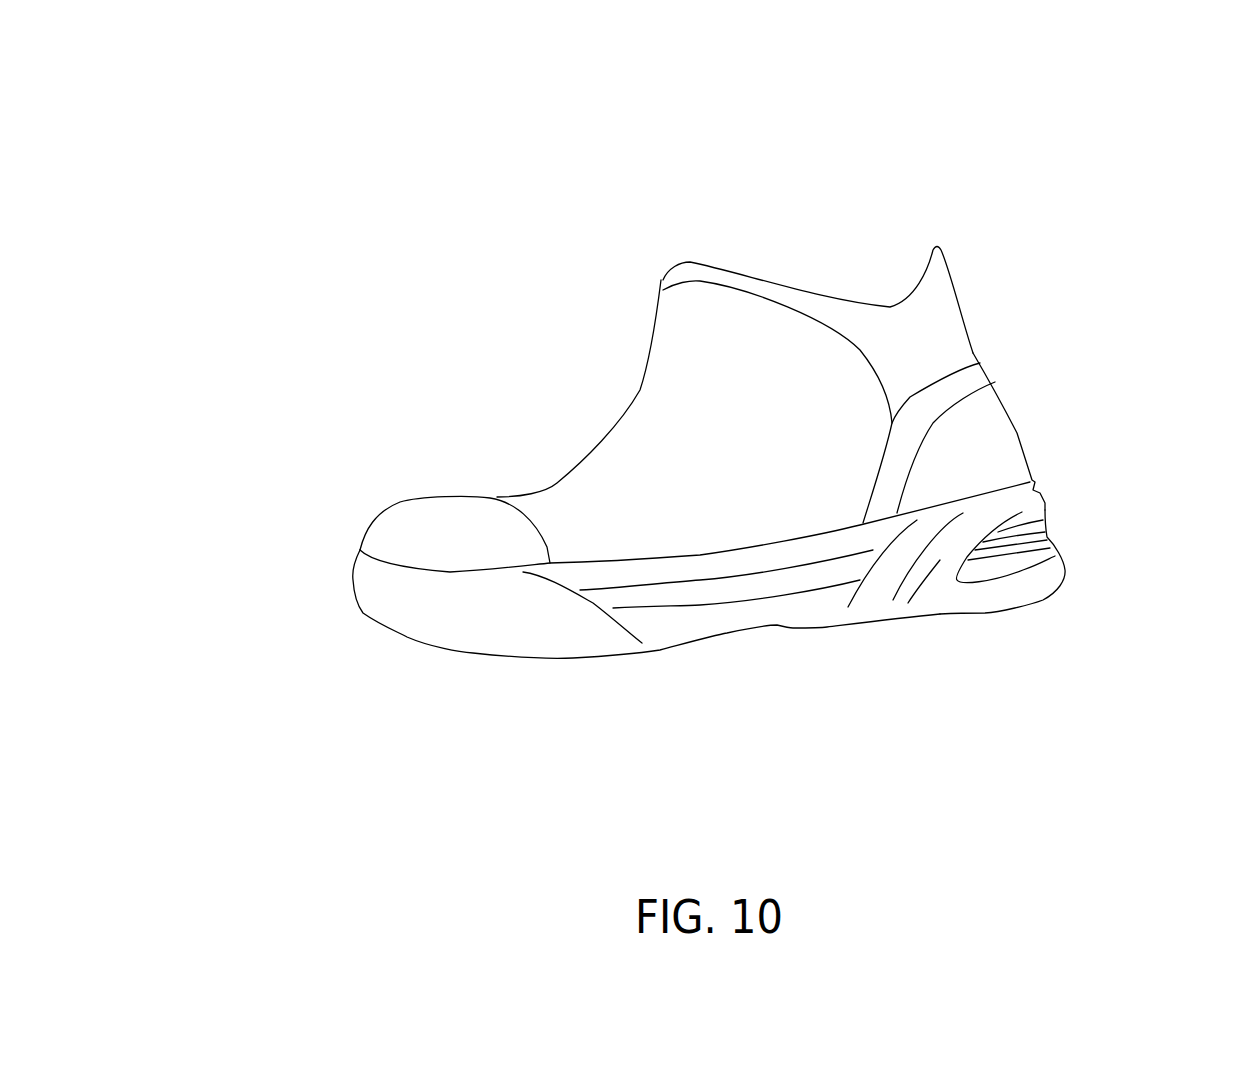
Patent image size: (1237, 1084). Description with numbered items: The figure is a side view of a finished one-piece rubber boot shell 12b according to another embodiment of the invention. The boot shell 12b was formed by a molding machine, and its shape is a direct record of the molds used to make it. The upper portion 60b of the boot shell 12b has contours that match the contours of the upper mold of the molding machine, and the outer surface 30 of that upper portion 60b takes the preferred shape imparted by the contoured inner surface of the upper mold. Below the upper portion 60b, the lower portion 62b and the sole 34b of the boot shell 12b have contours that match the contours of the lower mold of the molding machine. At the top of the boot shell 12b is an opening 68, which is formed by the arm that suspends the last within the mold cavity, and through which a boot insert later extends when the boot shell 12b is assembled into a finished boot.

The opening 68 is at (858, 268).
The outer surface 30 is at (938, 363).
The boot shell 12b is at (993, 457).
The upper portion 60b is at (642, 457).
The lower portion 62b is at (380, 612).
The sole 34b is at (985, 612).